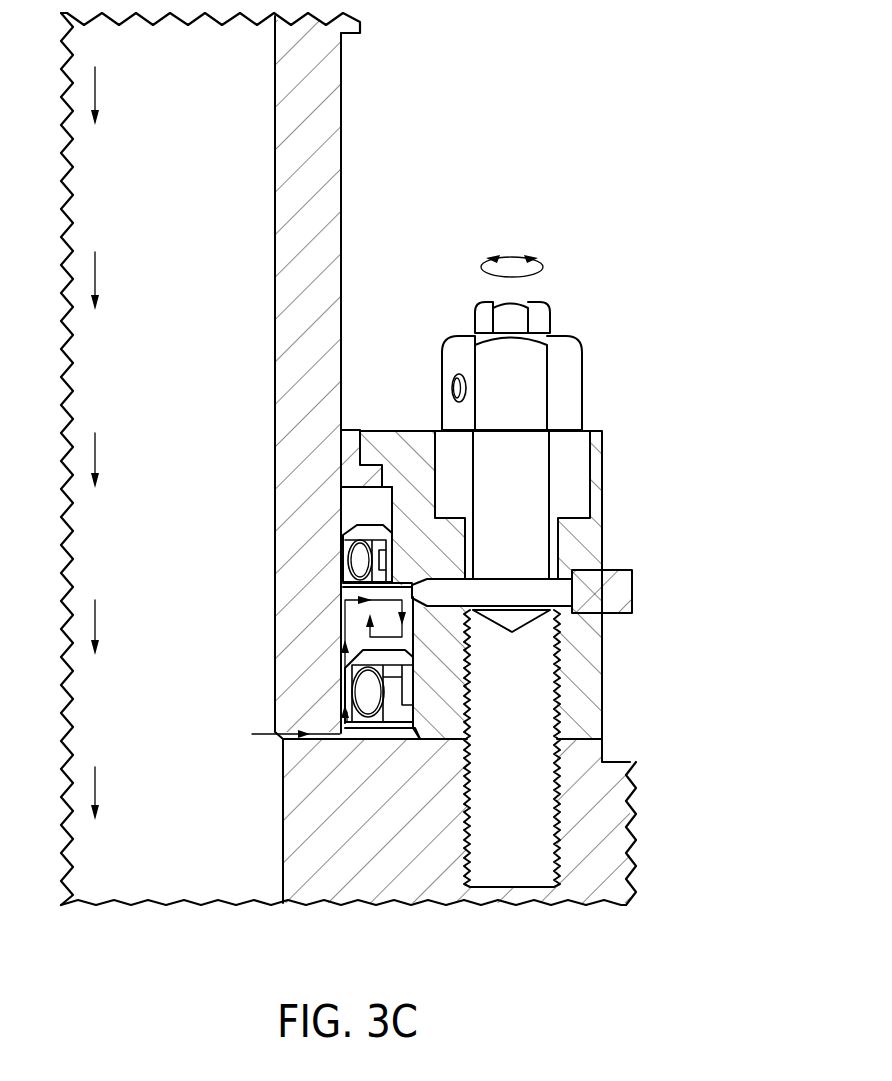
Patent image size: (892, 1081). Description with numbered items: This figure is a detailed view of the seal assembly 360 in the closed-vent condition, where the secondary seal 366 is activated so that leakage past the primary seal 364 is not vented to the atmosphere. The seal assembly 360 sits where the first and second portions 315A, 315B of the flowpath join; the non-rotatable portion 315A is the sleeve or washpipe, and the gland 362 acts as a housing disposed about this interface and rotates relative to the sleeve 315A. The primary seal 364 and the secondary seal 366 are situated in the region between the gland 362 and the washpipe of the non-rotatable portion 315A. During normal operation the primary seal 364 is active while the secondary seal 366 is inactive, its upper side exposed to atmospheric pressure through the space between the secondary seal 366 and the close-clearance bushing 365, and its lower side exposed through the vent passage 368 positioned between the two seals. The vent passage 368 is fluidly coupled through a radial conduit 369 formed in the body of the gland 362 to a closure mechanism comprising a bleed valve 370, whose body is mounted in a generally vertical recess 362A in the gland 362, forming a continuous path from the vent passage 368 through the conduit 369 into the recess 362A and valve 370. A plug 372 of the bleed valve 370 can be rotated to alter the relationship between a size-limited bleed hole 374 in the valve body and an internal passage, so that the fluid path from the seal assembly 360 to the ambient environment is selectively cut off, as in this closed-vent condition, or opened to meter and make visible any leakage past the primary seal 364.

The first portion of flowpath 315A is at (193, 360).
The second portion of flowpath 315B is at (180, 788).
The seal assembly 360 is at (560, 270).
The gland 362 is at (597, 667).
The recess 362A is at (537, 825).
The primary seal 364 is at (363, 692).
The close-clearance bushing 365 is at (348, 432).
The secondary seal 366 is at (357, 560).
The vent passage 368 is at (345, 597).
The radial conduit 369 is at (540, 578).
The bleed valve 370 is at (582, 362).
The plug 372 is at (550, 318).
The bleed hole 374 is at (452, 384).